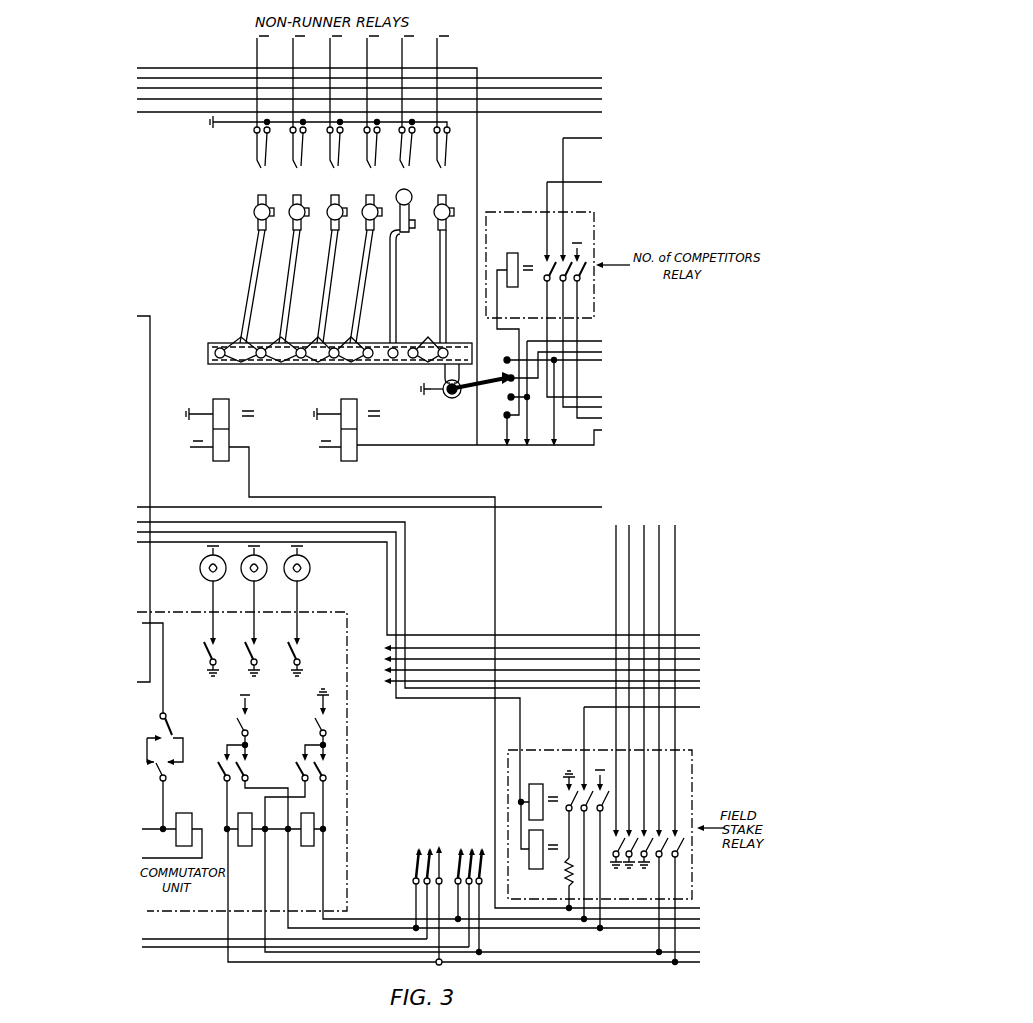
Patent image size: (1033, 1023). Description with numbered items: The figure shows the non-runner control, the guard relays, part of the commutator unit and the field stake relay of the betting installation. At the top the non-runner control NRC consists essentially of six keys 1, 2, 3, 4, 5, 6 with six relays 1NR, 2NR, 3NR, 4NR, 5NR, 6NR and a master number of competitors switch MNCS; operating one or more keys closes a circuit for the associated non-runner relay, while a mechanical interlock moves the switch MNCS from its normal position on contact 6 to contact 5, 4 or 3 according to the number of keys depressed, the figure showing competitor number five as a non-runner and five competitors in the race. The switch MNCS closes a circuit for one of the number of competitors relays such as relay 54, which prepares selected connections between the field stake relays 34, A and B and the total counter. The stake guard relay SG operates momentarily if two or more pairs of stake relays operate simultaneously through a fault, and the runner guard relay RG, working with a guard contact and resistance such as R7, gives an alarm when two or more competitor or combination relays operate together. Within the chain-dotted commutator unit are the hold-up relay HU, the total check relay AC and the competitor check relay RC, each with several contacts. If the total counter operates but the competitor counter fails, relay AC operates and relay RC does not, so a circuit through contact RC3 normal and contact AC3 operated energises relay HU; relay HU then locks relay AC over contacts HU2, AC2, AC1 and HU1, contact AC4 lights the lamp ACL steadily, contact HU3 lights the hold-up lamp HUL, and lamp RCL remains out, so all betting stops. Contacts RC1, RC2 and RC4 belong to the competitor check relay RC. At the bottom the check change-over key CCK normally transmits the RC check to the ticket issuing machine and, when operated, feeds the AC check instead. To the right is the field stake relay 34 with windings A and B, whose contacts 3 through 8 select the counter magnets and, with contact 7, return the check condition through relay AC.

The number of competitors relay 54 is at (544, 278).
The field stake relay 34 is at (600, 745).
The non-runner control NRC is at (291, 435).
The master number of competitors switch MNCS is at (467, 381).
The stake guard relay SG is at (434, 653).
The runner guard relay RG is at (374, 445).
The non-runner relay 1NR is at (259, 112).
The non-runner relay 2NR is at (296, 112).
The non-runner relay 3NR is at (333, 112).
The non-runner relay 4NR is at (370, 112).
The non-runner relay 5NR is at (405, 112).
The non-runner relay 6NR is at (441, 112).
The lamp for relay AC ACL is at (202, 593).
The lamp for relay RC RCL is at (245, 593).
The hold-up lamp HUL is at (289, 593).
The contact of relay AC AC4 is at (196, 657).
The contact of relay RC RC4 is at (239, 657).
The contact of relay HU HU3 is at (282, 657).
The contact of relay RC RC3 is at (173, 739).
The contact of relay AC AC3 is at (170, 783).
The contact of relay HU HU1 is at (249, 728).
The contact of relay AC AC1 is at (212, 795).
The contact of relay RC RC1 is at (262, 795).
The contact of relay HU HU2 is at (306, 725).
The contact of relay AC AC2 is at (286, 791).
The contact of relay RC RC2 is at (331, 795).
The hold-up relay HU is at (177, 833).
The total check relay AC is at (258, 840).
The competitor check relay RC is at (307, 840).
The check change-over key CCK is at (427, 888).
The resistance R7 is at (574, 884).
The non-runner key 1 is at (585, 814).
The non-runner key 2 is at (600, 850).
The non-runner key 3 is at (616, 707).
The non-runner key 4 is at (630, 707).
The non-runner key 5 is at (645, 707).
The non-runner key 6 is at (662, 740).
The contact of relay 34 7 is at (677, 745).
The contact of relay 34 8 is at (567, 814).